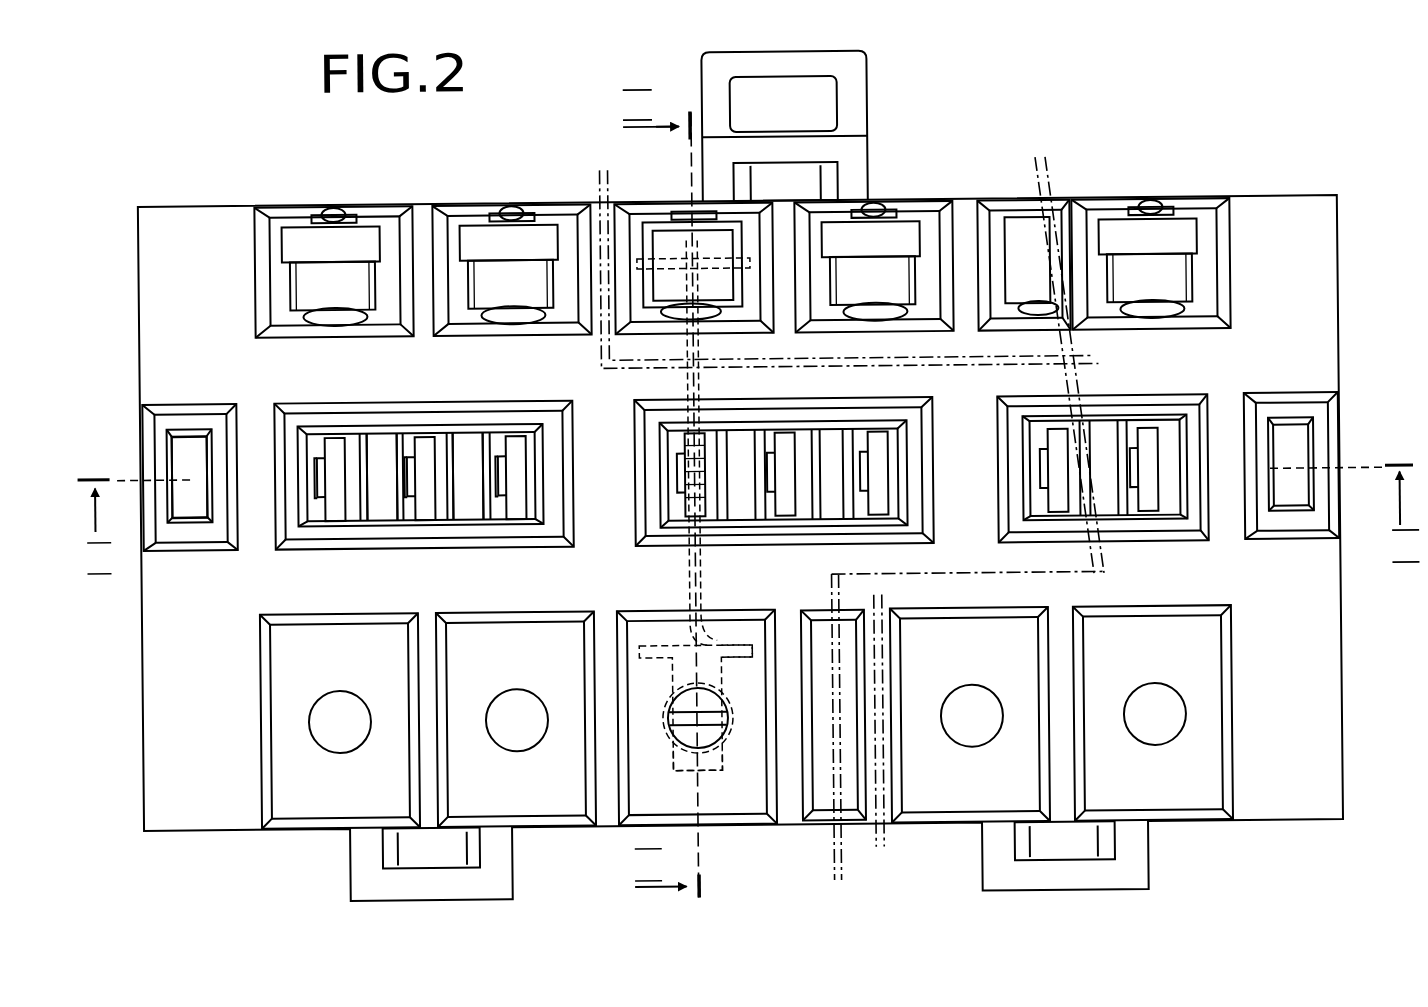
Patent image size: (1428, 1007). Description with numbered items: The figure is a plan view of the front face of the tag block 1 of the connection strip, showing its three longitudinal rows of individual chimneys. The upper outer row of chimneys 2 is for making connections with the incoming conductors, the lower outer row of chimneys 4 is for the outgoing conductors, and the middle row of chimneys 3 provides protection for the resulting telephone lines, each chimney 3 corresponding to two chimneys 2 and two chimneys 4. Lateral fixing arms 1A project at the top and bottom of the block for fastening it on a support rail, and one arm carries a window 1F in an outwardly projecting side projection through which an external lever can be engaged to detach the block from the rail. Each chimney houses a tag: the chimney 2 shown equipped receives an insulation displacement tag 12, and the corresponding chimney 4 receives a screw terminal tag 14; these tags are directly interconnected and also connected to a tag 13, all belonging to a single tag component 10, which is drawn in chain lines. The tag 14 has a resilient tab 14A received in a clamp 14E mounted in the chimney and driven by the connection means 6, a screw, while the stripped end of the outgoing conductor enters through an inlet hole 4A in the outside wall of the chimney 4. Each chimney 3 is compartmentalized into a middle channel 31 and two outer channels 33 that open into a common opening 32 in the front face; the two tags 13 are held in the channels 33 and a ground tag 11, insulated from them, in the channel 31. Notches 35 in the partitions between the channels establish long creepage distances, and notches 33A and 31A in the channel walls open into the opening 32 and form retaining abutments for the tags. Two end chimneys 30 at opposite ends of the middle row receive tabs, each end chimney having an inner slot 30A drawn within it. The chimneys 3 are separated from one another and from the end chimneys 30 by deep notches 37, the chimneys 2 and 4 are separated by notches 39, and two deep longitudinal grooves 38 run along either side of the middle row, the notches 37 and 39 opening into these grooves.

The tag block 1 is at (337, 194).
The lateral fixing arm 1A is at (859, 102).
The window 1F is at (824, 111).
The chimney 2 is at (278, 267).
The chimney 3 is at (724, 471).
The chimney 4 is at (257, 670).
The inlet hole 4A is at (706, 820).
The connection means 6 is at (682, 729).
The tag component 10 is at (688, 372).
The ground tag 11 is at (786, 491).
The tag 12 is at (674, 260).
The tag 13 is at (706, 475).
The tag 14 is at (662, 642).
The resilient tab 14A is at (731, 657).
The clamp 14E is at (719, 763).
The end chimney 30 is at (202, 410).
The fusible link slot 30A is at (190, 500).
The middle channel 31 is at (422, 441).
The notch 31A is at (420, 486).
The common opening 32 is at (386, 422).
The outer channel 33 is at (332, 441).
The notch 33A is at (324, 486).
The notch 35 is at (378, 500).
The deep notch 37 is at (600, 485).
The longitudinal groove 38 is at (1296, 354).
The notch 39 is at (974, 218).